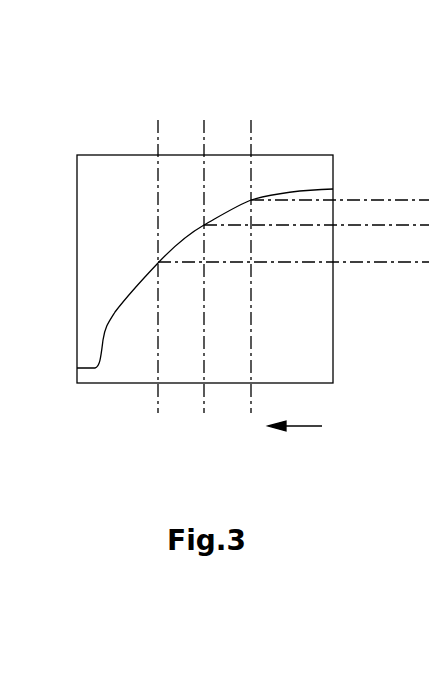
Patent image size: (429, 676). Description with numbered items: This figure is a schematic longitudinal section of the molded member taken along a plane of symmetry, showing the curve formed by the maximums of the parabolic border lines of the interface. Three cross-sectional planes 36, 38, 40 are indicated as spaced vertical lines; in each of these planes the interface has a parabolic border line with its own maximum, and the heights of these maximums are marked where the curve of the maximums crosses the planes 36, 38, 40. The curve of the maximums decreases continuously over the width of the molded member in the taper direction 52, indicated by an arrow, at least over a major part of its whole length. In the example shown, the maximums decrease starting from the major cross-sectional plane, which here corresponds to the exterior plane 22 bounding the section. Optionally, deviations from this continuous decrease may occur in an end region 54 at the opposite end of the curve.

The exterior plane 22 is at (341, 302).
The cross-sectional plane 36 is at (158, 138).
The cross-sectional plane 38 is at (204, 138).
The cross-sectional plane 40 is at (251, 138).
The taper direction 52 is at (307, 427).
The end region 54 is at (110, 414).